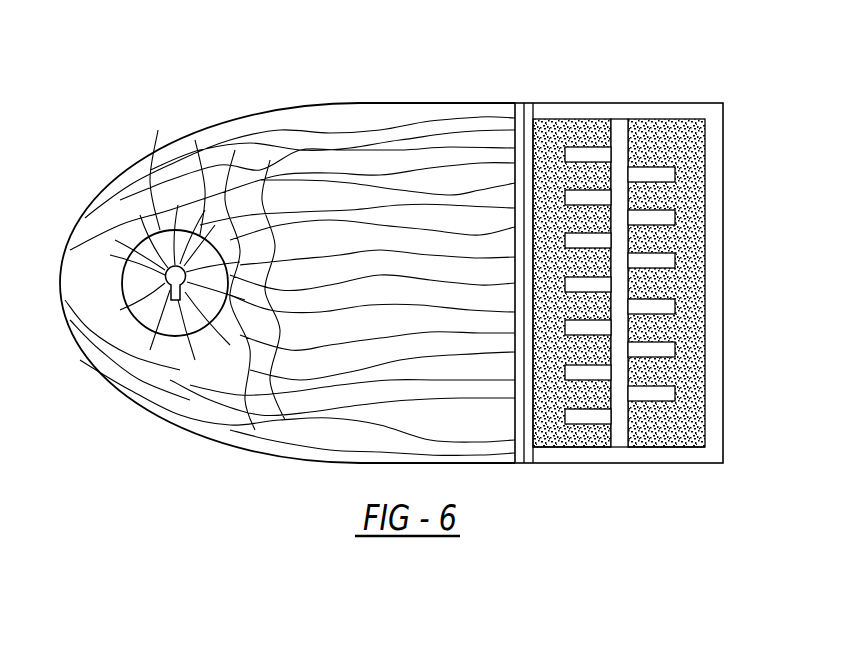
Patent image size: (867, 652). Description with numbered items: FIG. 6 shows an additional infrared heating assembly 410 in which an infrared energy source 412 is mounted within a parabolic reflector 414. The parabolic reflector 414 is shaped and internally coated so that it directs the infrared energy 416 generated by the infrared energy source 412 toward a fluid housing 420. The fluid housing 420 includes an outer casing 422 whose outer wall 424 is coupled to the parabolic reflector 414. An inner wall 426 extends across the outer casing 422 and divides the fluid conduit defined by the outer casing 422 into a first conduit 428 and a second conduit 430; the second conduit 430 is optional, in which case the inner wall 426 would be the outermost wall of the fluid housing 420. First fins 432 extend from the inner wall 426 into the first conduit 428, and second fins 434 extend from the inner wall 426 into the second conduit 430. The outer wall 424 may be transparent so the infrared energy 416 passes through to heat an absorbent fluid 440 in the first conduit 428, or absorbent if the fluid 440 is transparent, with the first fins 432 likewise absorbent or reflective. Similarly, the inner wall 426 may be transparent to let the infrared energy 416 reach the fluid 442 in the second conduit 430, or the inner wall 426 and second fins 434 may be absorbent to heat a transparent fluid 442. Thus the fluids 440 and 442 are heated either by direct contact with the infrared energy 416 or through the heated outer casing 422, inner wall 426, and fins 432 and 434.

The infrared heating assembly 410 is at (78, 156).
The infrared energy source 412 is at (173, 280).
The parabolic reflector 414 is at (303, 462).
The infrared energy 416 is at (127, 190).
The fluid housing 420 is at (648, 494).
The outer casing 422 is at (722, 378).
The outer wall 424 is at (522, 455).
The inner wall 426 is at (618, 423).
The first conduit 428 is at (592, 133).
The second conduit 430 is at (663, 130).
The first fins 432 is at (593, 155).
The second fins 434 is at (665, 172).
The fluid 440 is at (595, 439).
The fluid 442 is at (677, 422).